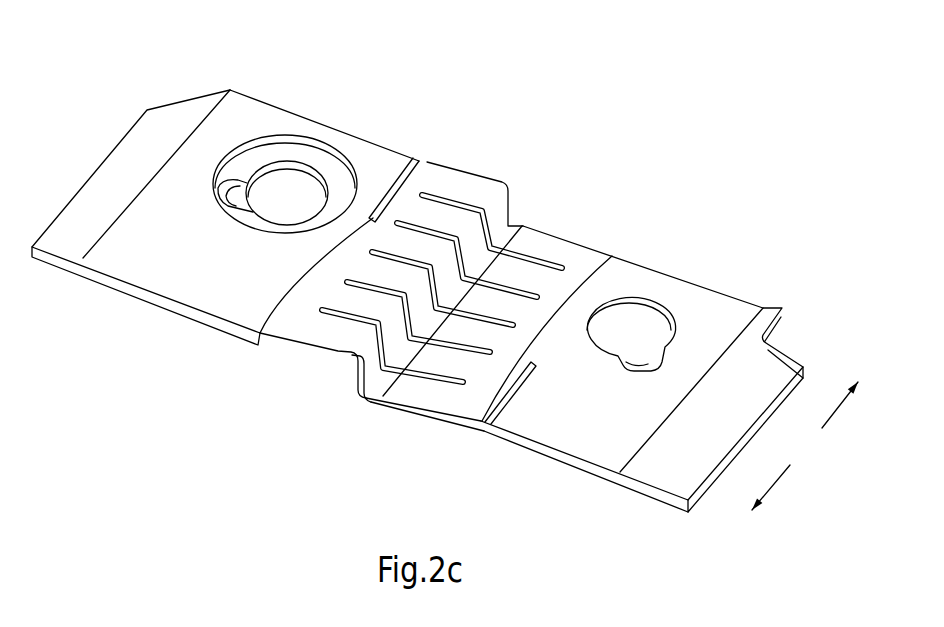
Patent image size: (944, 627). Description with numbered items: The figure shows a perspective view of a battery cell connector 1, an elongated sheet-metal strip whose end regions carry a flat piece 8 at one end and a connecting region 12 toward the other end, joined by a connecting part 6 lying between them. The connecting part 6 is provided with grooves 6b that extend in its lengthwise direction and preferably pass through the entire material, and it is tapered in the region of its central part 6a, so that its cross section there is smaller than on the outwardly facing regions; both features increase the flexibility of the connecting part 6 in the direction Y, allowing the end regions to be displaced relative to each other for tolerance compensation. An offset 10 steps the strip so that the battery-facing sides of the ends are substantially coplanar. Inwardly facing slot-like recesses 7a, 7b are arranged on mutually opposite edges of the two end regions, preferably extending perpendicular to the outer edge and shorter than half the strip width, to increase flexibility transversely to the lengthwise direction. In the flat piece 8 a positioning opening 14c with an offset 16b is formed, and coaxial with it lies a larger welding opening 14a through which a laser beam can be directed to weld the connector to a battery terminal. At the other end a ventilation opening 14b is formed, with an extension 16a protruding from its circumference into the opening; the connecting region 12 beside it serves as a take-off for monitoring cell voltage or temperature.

The battery cell connector 1 is at (667, 162).
The connecting part 6 is at (480, 160).
The central part 6a is at (358, 373).
The grooves 6b is at (530, 260).
The slot-like recess 7a is at (398, 187).
The slot-like recess 7b is at (485, 430).
The flat piece 8 is at (118, 163).
The offset 10 is at (412, 410).
The connecting region 12 is at (762, 372).
The welding opening 14a is at (313, 157).
The ventilation opening 14b is at (640, 322).
The positioning opening 14c is at (282, 185).
The extension 16a is at (620, 363).
The offset 16b is at (217, 185).
The direction Y is at (805, 446).